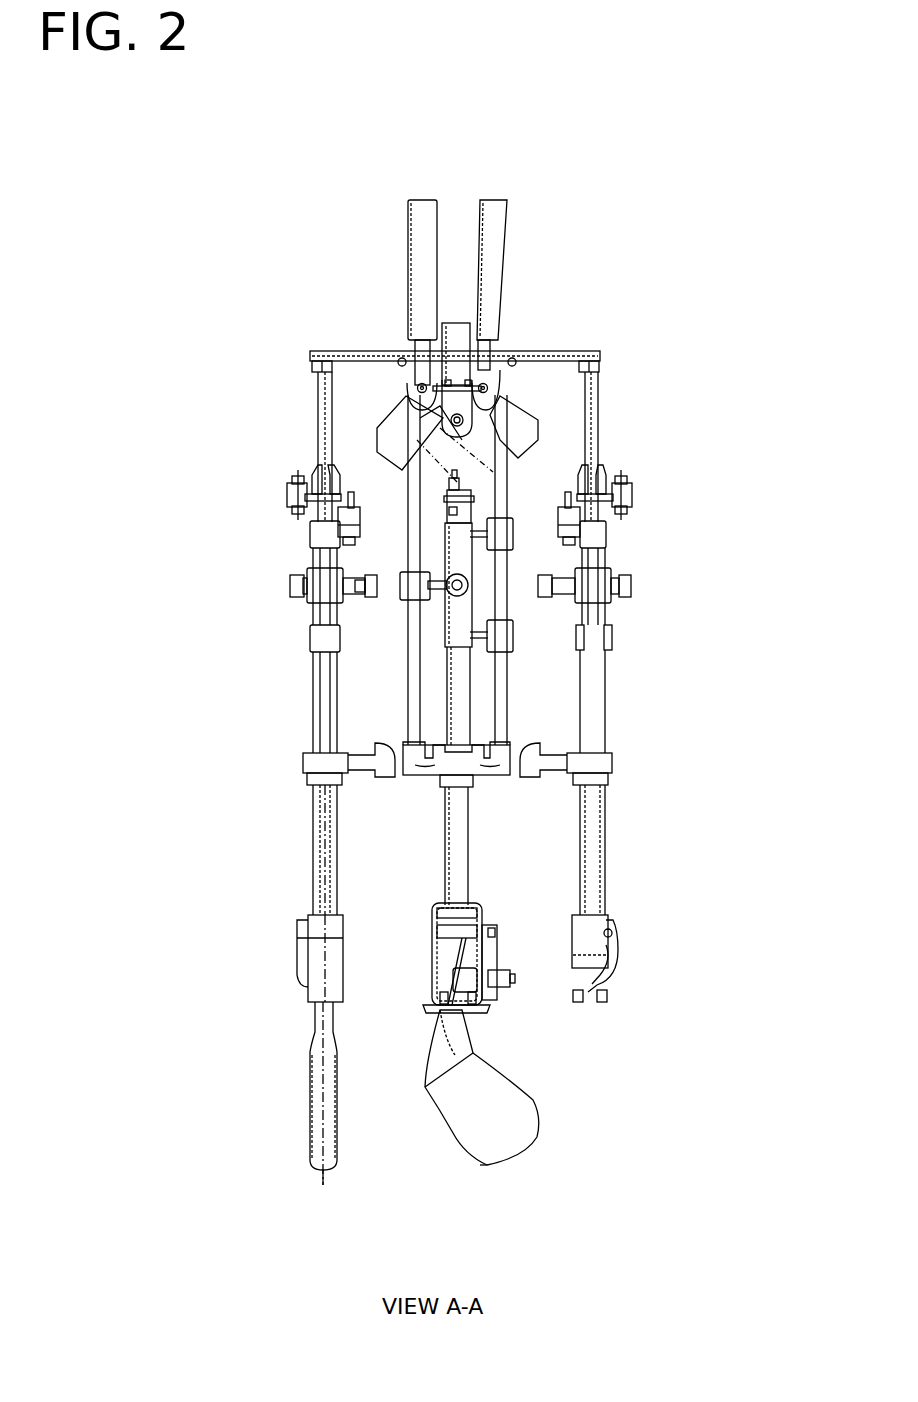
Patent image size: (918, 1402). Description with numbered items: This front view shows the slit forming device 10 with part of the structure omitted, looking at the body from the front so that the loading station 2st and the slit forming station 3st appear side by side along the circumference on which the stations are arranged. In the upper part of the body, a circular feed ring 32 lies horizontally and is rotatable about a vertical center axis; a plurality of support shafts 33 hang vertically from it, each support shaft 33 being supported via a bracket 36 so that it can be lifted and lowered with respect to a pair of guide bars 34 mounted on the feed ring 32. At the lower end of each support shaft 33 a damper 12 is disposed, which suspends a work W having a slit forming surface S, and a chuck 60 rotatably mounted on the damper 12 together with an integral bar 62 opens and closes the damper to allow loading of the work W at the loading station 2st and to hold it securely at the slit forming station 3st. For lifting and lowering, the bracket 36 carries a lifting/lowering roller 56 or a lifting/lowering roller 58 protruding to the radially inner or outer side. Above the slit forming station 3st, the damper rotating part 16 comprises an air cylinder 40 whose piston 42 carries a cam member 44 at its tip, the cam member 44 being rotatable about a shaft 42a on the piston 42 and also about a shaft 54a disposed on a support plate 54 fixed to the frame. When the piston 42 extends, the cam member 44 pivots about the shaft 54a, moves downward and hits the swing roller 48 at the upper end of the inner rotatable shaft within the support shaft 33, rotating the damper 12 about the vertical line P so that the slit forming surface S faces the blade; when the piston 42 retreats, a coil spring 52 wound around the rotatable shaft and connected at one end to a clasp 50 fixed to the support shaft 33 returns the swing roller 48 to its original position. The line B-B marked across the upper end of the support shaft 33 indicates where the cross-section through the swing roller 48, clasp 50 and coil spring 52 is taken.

The slit forming device 10 is at (500, 153).
The air cylinder 40 is at (410, 232).
The damper rotating part 16 is at (400, 270).
The feed ring 32 is at (325, 350).
The piston 42 is at (423, 368).
The shaft 42a is at (420, 387).
The support plate 54 is at (462, 340).
The shaft 54a is at (460, 420).
The cam member 44 is at (400, 415).
The line B- B is at (455, 448).
The guide bars 34 is at (410, 690).
The swing roller 48 is at (292, 488).
The coil spring 52 is at (562, 497).
The clasp 50 is at (566, 498).
The lifting/lowering roller 58 is at (292, 588).
The lifting/lowering roller 56 is at (368, 600).
The bracket 36 is at (512, 636).
The support shaft 33 is at (462, 833).
The vertical line P is at (323, 860).
The damper 12 is at (287, 962).
The slit forming surface S is at (311, 1086).
The bar 62 is at (503, 970).
The chuck 60 is at (612, 957).
The work W is at (430, 1115).
The slit forming station 3st is at (311, 1176).
The loading station 2st is at (474, 1176).